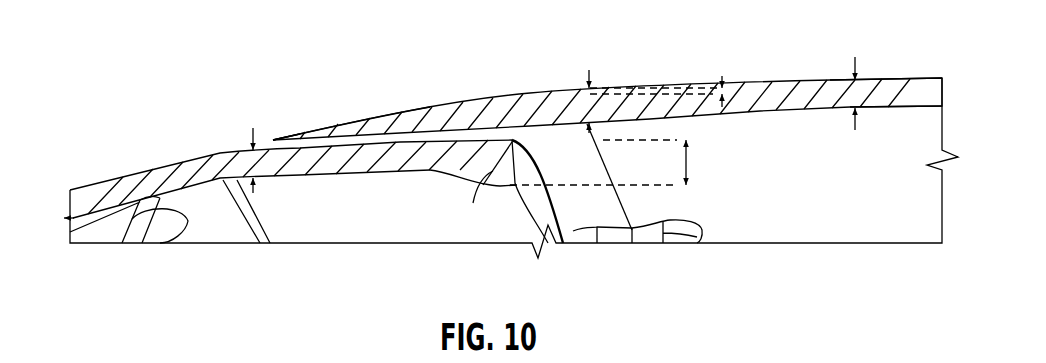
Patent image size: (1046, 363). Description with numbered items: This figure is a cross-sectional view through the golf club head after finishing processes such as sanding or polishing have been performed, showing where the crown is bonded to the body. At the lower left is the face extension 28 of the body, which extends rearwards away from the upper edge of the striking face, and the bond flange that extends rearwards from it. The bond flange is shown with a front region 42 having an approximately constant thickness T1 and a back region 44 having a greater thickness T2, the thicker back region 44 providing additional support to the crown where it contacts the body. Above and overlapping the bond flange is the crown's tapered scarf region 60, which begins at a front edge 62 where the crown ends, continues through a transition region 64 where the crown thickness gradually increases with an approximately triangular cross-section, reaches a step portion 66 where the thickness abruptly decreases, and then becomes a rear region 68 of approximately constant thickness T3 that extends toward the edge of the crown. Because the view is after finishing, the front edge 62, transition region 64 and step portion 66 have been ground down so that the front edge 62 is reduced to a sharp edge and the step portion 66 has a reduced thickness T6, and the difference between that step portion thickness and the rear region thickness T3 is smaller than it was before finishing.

The face extension 28 is at (132, 183).
The front region 42 is at (337, 165).
The back region 44 is at (432, 173).
The tapered scarf region 60 is at (497, 98).
The front edge 62 is at (277, 139).
The transition region 64 is at (373, 119).
The step portion 66 is at (586, 82).
The rear region 68 is at (891, 87).
The front region thickness T1 is at (257, 191).
The back region thickness T2 is at (690, 164).
The rear region thickness T3 is at (853, 125).
The finished step portion thickness T6 is at (590, 80).